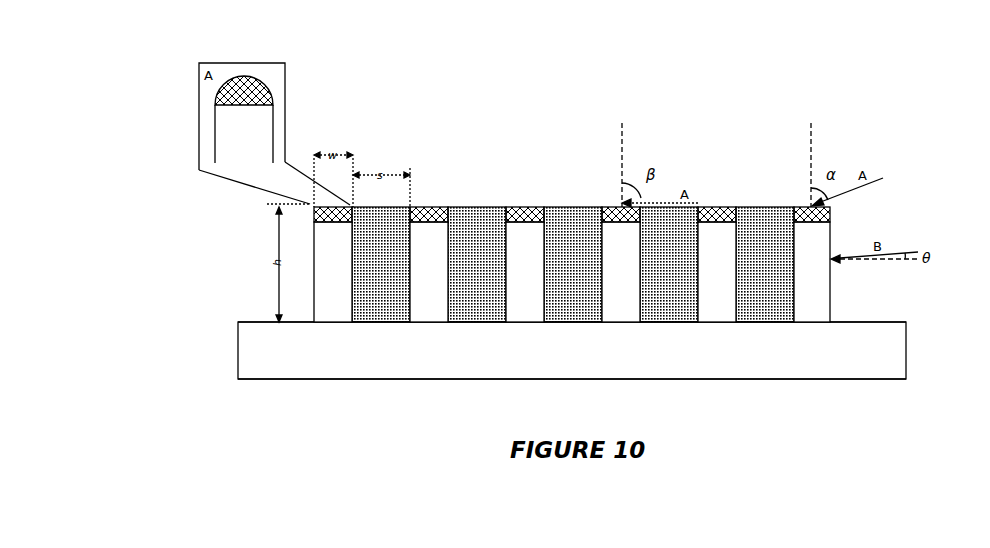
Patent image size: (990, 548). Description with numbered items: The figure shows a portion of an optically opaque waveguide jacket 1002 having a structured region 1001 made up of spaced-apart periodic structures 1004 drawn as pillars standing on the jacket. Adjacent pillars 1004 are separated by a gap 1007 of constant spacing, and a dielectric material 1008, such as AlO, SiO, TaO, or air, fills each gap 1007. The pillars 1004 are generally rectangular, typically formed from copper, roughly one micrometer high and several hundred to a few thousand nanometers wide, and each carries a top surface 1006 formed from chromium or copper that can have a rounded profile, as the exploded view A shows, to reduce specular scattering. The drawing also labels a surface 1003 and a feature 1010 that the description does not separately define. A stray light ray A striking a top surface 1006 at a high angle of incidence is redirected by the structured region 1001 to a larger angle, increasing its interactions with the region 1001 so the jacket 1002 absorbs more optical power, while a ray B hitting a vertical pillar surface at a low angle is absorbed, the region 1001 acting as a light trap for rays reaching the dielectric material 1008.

The structured region 1001 is at (487, 352).
The waveguide jacket 1002 is at (800, 367).
The substrate top surface 1003 is at (872, 322).
The periodic structures 1004 is at (503, 265).
The top surface 1006 is at (427, 207).
The gap 1007 is at (387, 303).
The dielectric material 1008 is at (566, 218).
The cap top surface 1010 is at (526, 207).